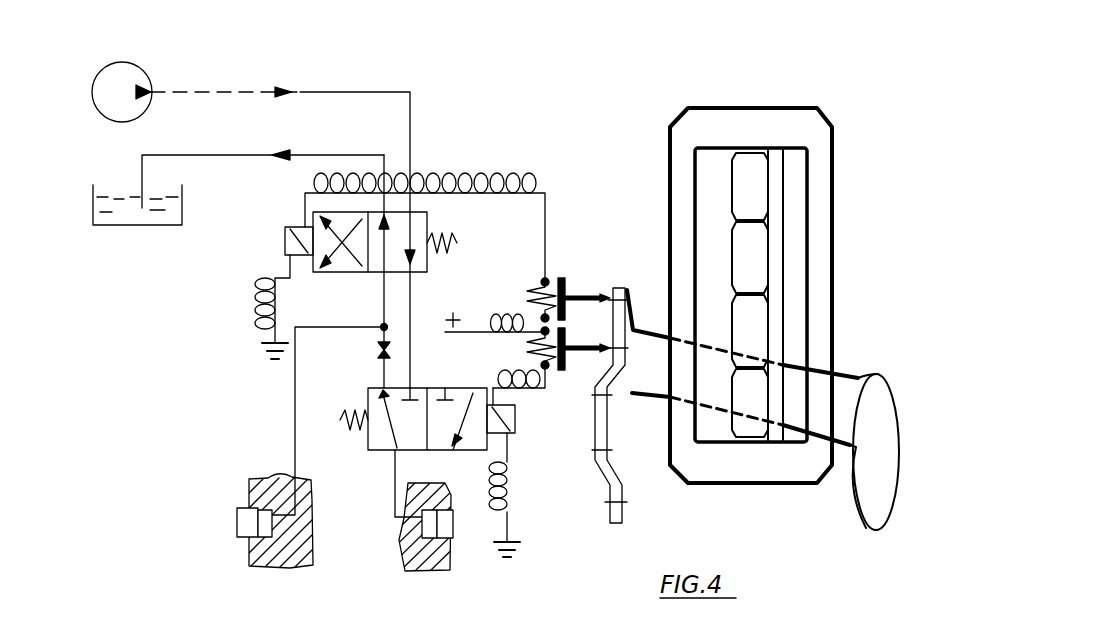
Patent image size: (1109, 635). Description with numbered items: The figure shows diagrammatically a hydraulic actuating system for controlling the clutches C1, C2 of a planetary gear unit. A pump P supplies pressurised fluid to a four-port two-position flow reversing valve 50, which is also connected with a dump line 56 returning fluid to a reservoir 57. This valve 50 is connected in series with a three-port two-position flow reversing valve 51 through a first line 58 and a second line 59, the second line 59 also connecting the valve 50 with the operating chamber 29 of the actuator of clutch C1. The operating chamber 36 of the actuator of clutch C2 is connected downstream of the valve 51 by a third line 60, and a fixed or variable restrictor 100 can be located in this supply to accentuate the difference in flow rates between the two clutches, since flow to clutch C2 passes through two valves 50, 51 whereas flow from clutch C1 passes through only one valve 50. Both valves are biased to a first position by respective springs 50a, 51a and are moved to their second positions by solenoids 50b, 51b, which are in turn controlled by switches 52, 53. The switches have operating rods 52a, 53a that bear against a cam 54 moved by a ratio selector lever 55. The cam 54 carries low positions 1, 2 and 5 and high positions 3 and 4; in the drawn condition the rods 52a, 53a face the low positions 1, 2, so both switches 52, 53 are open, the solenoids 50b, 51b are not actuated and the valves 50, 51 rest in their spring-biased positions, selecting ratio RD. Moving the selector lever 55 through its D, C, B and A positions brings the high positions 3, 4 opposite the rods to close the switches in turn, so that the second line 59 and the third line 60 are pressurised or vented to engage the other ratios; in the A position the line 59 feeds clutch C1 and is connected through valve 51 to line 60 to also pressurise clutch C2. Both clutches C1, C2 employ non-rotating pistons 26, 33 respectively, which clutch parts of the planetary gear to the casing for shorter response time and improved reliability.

The pump P is at (135, 80).
The dump line 56 is at (212, 155).
The reservoir 57 is at (182, 212).
The first line 58 is at (412, 298).
The second line 59 is at (385, 310).
The four-port two-position flow reversing valve 50 is at (373, 278).
The spring 50a is at (457, 242).
The solenoid 50b is at (285, 238).
The fixed or variable restrictor 100 is at (378, 350).
The three-port two-position flow reversing valve 51 is at (437, 452).
The spring 51a is at (342, 417).
The solenoid 51b is at (515, 420).
The switch 52 is at (535, 283).
The switch 53 is at (525, 340).
The operating rod 52a is at (580, 298).
The operating rod 53a is at (587, 348).
The cam 54 is at (603, 428).
The low position 1 is at (629, 299).
The low position 2 is at (625, 349).
The high position 3 is at (609, 398).
The high position 4 is at (609, 453).
The low position 5 is at (626, 504).
The ratio selector lever 55 is at (868, 508).
The third line 60 is at (395, 478).
The clutch C1 is at (222, 513).
The clutch C2 is at (407, 561).
The non-rotating piston 26 is at (237, 520).
The operating chamber 29 is at (265, 537).
The operating chamber 36 is at (420, 538).
The non-rotating piston 33 is at (445, 530).
The A position A is at (750, 186).
The B position B is at (750, 257).
The C position C is at (750, 331).
The D position D is at (750, 403).